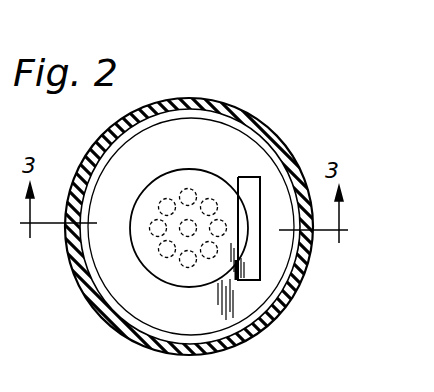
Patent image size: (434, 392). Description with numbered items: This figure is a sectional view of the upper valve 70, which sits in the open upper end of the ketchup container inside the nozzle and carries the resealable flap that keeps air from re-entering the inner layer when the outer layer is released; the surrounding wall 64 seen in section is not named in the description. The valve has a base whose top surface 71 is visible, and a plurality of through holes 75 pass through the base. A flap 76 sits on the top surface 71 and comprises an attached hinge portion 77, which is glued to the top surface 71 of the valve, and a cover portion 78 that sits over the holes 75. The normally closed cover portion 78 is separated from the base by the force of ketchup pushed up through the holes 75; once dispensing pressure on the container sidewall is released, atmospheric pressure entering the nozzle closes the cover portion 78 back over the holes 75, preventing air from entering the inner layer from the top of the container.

The tubular housing 64 is at (265, 128).
The upper valve 70 is at (108, 268).
The top surface 71 is at (208, 133).
The through holes 75 is at (186, 262).
The flap 76 is at (183, 168).
The hinge portion 77 is at (257, 177).
The cover portion 78 is at (155, 183).